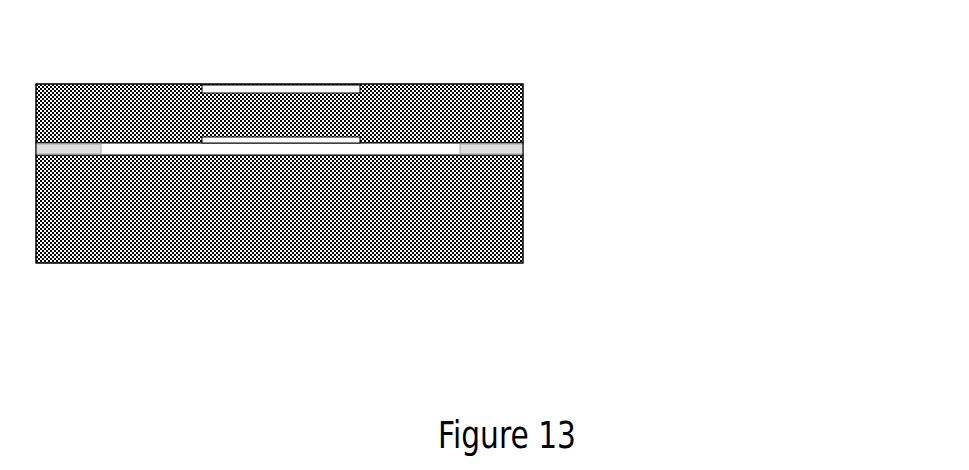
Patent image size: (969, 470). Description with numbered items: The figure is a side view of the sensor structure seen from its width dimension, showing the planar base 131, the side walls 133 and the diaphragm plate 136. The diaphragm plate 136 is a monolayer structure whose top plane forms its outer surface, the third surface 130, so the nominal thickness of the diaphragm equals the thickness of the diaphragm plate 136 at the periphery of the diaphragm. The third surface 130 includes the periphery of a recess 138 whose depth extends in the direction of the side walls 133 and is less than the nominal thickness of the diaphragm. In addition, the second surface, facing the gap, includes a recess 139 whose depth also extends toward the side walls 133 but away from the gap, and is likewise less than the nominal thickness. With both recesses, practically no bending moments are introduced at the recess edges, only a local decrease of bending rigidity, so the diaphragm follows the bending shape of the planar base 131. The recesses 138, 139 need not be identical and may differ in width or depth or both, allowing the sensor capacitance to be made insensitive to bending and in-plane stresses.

The third surface 130 is at (455, 77).
The planar base 131 is at (502, 247).
The side walls 133 is at (497, 145).
The diaphragm plate 136 is at (502, 91).
The recess 138 is at (303, 81).
The recess 139 is at (343, 130).